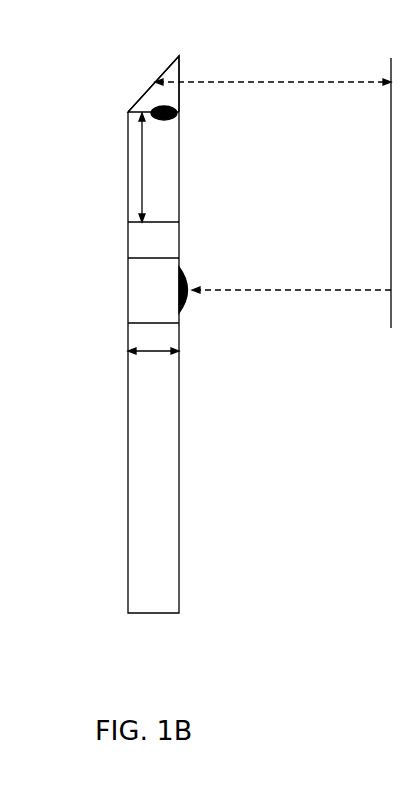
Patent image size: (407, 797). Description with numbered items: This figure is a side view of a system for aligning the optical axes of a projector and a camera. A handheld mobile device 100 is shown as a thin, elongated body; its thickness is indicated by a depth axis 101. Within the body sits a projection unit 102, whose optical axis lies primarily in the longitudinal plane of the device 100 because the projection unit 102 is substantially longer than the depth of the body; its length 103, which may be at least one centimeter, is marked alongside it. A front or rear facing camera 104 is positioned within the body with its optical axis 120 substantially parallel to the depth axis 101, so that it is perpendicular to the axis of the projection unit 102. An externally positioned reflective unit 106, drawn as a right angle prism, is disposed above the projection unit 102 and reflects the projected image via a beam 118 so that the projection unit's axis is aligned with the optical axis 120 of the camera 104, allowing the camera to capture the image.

The handheld mobile device 100 is at (181, 495).
The depth axis 101 is at (152, 362).
The projection unit 102 is at (170, 120).
The length of projection unit 103 is at (140, 168).
The camera 104 is at (192, 311).
The reflective unit 106 is at (166, 68).
The beam 118 is at (355, 78).
The optical axis of camera 120 is at (365, 287).